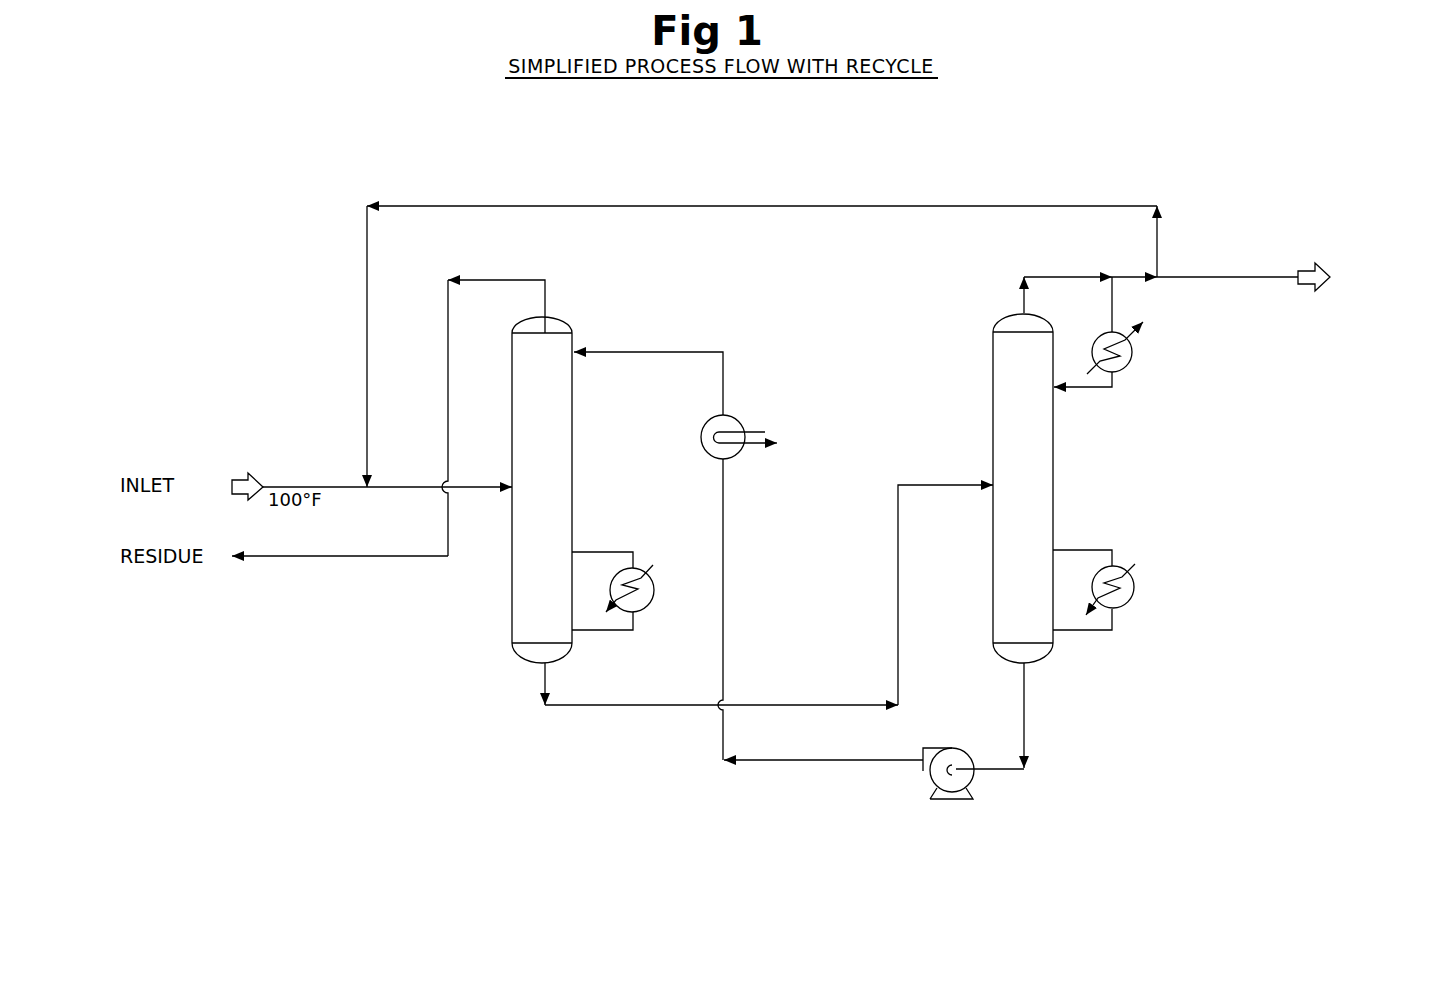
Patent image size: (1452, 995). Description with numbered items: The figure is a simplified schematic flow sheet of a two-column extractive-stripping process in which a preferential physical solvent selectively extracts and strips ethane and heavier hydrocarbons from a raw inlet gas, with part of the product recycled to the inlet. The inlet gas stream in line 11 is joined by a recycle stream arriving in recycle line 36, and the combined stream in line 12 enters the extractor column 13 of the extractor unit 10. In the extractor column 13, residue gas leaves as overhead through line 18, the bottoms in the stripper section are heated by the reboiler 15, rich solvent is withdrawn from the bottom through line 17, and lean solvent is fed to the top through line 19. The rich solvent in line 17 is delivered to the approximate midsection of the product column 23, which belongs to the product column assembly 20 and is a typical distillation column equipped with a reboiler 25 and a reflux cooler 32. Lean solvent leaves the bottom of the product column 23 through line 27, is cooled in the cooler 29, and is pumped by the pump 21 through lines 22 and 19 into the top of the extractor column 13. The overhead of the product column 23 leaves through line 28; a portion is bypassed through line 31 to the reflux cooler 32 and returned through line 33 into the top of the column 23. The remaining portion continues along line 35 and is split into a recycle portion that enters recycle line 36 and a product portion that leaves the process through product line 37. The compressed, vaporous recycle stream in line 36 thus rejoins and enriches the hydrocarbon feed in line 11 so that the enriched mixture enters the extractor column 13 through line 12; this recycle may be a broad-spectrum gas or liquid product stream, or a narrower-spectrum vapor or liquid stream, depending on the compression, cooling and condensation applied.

The extractor unit 10 is at (482, 588).
The inlet gas line 11 is at (325, 485).
The combined stream line 12 is at (433, 485).
The extractor column 13 is at (573, 473).
The reboiler 15 is at (656, 589).
The rich solvent line 17 is at (575, 703).
The residue gas line 18 is at (547, 293).
The lean solvent feed line 19 is at (725, 373).
The product column assembly 20 is at (1107, 480).
The pump 21 is at (950, 748).
The lean solvent recycle line 22 is at (725, 554).
The product column 23 is at (992, 362).
The reboiler 25 is at (1136, 588).
The lean solvent bottoms line 27 is at (1026, 717).
The overhead line 28 is at (1068, 275).
The cooler 29 is at (705, 421).
The reflux bypass line 31 is at (1112, 305).
The reflux cooler 32 is at (1133, 352).
The reflux return line 33 is at (1098, 388).
The product line 35 is at (1137, 277).
The recycle line 36 is at (1159, 243).
The product line 37 is at (1258, 276).